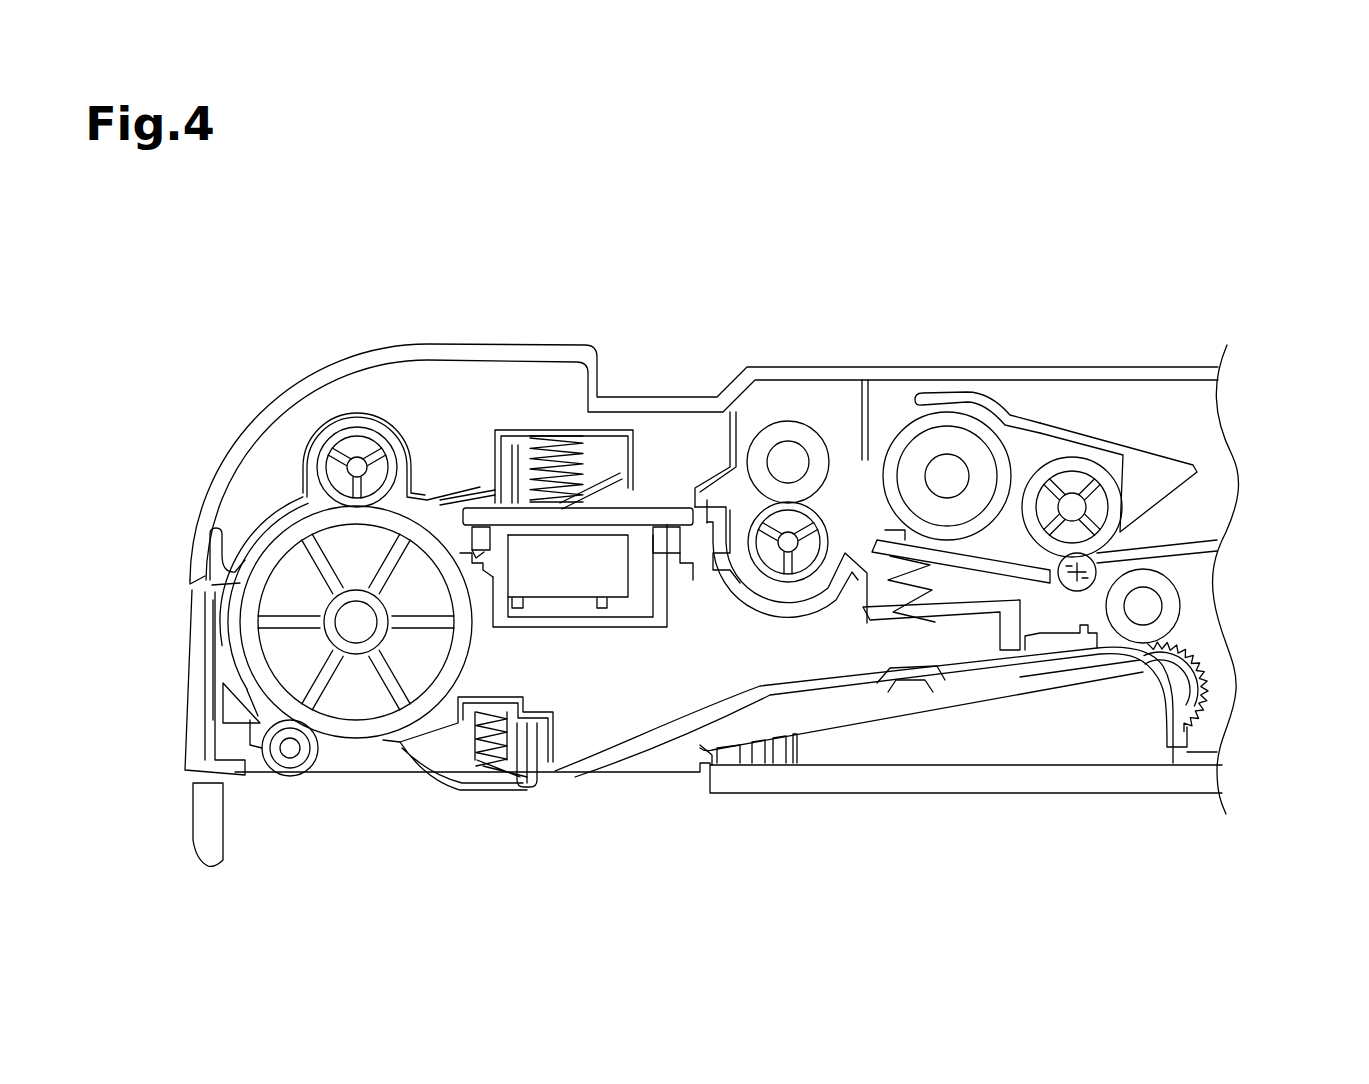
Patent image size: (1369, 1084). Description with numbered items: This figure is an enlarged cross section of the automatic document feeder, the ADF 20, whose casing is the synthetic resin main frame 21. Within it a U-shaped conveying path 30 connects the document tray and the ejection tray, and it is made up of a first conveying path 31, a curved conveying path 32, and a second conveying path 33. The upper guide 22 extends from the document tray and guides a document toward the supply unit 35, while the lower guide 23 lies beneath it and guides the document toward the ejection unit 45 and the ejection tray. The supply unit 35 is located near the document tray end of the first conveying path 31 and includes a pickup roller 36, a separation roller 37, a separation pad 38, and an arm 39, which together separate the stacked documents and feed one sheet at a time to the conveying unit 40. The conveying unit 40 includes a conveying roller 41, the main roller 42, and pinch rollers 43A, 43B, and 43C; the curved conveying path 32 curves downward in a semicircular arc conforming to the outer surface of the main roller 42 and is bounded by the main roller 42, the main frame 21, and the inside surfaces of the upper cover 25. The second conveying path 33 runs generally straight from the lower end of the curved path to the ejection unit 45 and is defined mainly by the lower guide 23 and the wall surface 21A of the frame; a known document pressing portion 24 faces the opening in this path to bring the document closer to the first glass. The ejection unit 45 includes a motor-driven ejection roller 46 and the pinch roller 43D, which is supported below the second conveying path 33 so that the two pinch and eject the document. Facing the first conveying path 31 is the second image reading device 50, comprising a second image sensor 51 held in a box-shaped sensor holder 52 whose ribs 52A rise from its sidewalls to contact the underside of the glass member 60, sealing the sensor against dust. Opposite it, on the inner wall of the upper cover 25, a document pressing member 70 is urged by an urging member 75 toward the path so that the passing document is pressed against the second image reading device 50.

The ADF 20 is at (510, 255).
The main frame 21 is at (192, 685).
The wall surface 21A is at (850, 713).
The upper guide 22 is at (1180, 553).
The lower guide 23 is at (760, 690).
The document pressing portion 24 is at (487, 778).
The upper cover 25 is at (247, 427).
The U-shaped conveying path 30 is at (1153, 533).
The first conveying path 31 is at (682, 490).
The curved conveying path 32 is at (213, 568).
The second conveying path 33 is at (720, 720).
The supply unit 35 is at (1020, 407).
The pickup roller 36 is at (1073, 460).
The separation roller 37 is at (893, 428).
The separation pad 38 is at (993, 567).
The arm 39 is at (950, 398).
The conveying unit 40 is at (273, 560).
The conveying roller 41 is at (790, 425).
The main roller 42 is at (267, 532).
The pinch roller 43A is at (820, 530).
The pinch roller 43B is at (357, 430).
The pinch roller 43C is at (290, 778).
The pinch roller 43D is at (1205, 703).
The ejection unit 45 is at (1193, 633).
The ejection roller 46 is at (1170, 610).
The second image reading device 50 is at (630, 607).
The second image sensor 51 is at (570, 587).
The sensor holder 52 is at (530, 627).
The ribs 52A is at (478, 545).
The glass member 60 is at (652, 508).
The document pressing member 70 is at (490, 458).
The urging member 75 is at (570, 440).